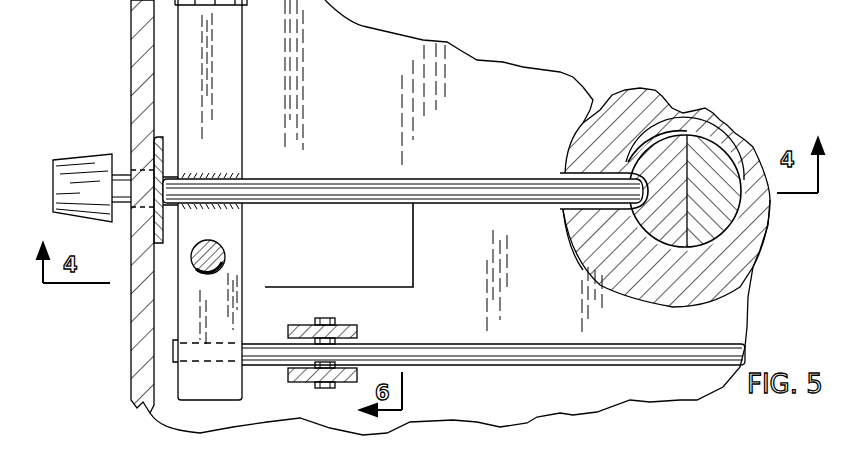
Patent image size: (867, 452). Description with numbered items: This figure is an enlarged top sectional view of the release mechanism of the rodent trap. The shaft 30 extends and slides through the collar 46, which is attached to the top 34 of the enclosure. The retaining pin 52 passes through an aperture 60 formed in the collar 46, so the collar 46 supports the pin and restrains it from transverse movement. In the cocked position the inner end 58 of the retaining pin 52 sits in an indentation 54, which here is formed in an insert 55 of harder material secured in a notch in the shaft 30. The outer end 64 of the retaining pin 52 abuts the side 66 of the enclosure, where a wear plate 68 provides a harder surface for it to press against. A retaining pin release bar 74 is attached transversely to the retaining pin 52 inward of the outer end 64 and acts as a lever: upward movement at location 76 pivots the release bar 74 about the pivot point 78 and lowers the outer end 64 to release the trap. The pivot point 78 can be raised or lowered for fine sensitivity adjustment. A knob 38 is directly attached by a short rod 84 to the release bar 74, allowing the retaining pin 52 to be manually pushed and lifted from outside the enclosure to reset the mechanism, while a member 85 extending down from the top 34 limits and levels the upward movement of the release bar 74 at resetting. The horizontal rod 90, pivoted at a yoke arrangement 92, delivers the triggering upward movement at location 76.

The shaft 30 is at (714, 165).
The top of the enclosure 34 is at (293, 414).
The knob 38 is at (70, 170).
The collar 46 is at (742, 278).
The retaining pin 52 is at (470, 190).
The indentation 54 is at (660, 172).
The insert 55 is at (628, 162).
The inner end of the retaining pin 58 is at (562, 229).
The aperture 60 is at (565, 177).
The outer end of the retaining pin 64 is at (182, 190).
The side of the enclosure 66 is at (131, 16).
The wear plate 68 is at (153, 240).
The retaining pin release bar 74 is at (228, 67).
The location on the release bar 76 is at (208, 353).
The pivot point 78 is at (223, 254).
The short rod 84 is at (125, 185).
The member 85 is at (261, 0).
The horizontal rod 90 is at (518, 339).
The yoke arrangement 92 is at (357, 328).